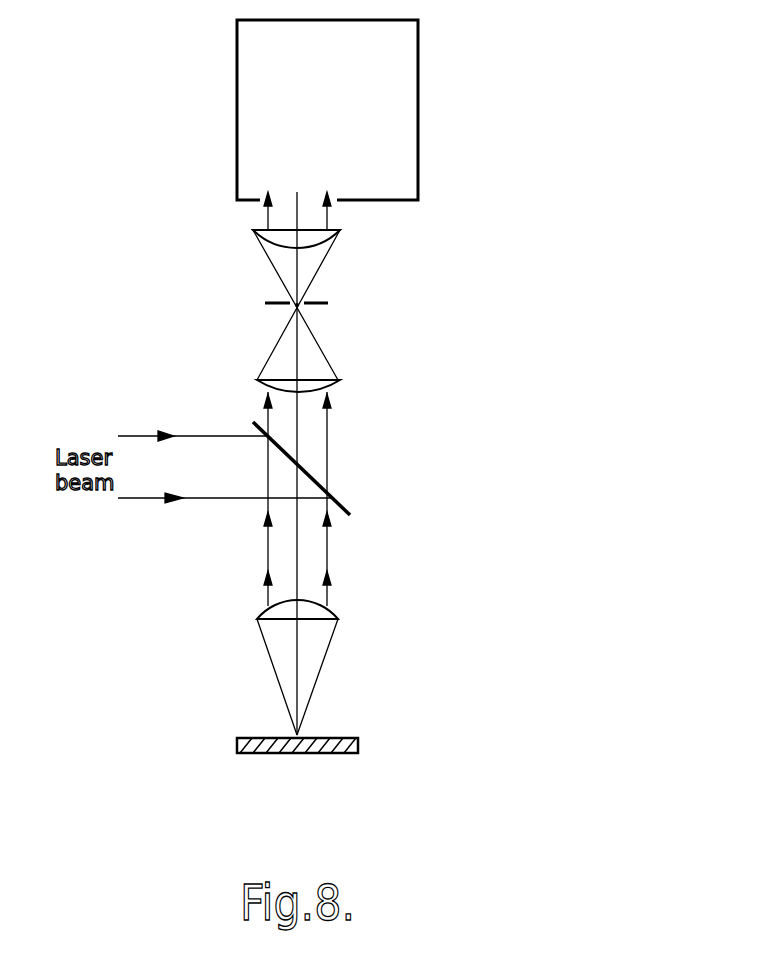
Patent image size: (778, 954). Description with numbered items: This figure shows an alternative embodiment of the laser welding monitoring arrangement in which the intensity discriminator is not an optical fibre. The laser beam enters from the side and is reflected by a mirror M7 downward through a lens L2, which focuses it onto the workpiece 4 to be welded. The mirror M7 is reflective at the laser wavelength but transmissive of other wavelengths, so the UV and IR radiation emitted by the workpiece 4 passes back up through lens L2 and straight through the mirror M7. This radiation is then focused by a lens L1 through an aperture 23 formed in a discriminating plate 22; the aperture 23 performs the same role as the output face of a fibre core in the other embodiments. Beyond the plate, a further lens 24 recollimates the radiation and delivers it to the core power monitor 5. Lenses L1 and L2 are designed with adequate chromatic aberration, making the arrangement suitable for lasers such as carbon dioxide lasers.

The core power monitor 5 is at (418, 50).
The further lens 24 is at (262, 233).
The aperture 23 is at (299, 298).
The discriminating plate 22 is at (280, 307).
The lens L1 is at (340, 383).
The mirror M7 is at (308, 469).
The lens L2 is at (335, 613).
The workpiece 4 is at (255, 737).